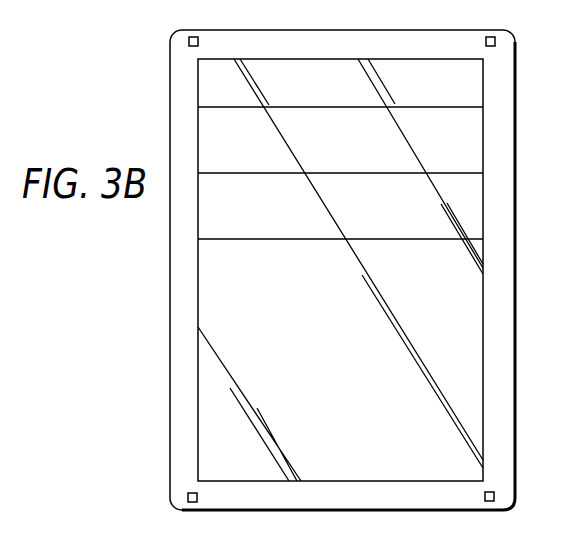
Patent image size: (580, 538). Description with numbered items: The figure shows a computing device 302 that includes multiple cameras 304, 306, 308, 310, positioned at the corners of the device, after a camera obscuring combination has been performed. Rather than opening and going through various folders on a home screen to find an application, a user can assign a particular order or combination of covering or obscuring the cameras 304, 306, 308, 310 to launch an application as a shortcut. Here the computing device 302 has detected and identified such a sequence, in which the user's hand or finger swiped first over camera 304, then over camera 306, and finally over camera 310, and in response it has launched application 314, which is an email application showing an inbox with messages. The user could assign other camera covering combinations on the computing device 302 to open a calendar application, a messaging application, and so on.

The computing device 302 is at (516, 108).
The camera 304 is at (189, 44).
The camera 306 is at (496, 43).
The camera 308 is at (495, 497).
The camera 310 is at (188, 497).
The application 314 is at (237, 285).